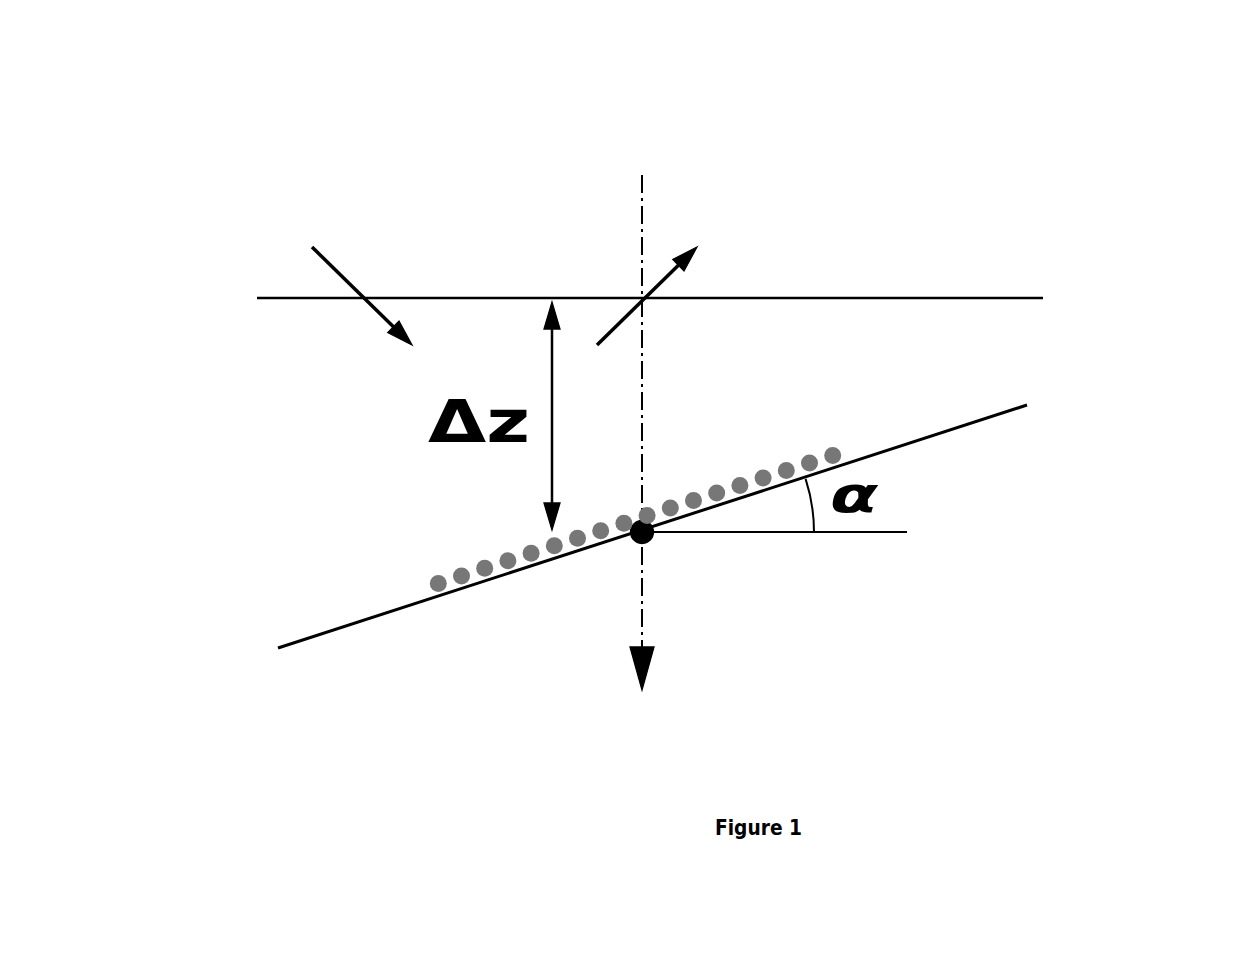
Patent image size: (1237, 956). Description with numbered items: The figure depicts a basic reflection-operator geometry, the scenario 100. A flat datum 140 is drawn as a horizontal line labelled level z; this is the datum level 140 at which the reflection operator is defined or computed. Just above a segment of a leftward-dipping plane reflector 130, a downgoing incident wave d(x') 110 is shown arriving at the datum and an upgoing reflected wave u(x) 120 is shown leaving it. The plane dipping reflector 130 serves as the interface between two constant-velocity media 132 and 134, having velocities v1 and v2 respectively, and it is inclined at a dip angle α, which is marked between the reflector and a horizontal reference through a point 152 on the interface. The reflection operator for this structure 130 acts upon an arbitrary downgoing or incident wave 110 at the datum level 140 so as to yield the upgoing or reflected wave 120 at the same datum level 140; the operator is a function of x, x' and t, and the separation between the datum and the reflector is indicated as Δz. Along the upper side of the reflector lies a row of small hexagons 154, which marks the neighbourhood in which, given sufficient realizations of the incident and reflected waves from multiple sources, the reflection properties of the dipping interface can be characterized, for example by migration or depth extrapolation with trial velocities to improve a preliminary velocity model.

The scenario 100 is at (355, 130).
The downgoing incident wave d(x') 110 is at (345, 263).
The upgoing reflected wave u(x) 120 is at (810, 200).
The plane dipping reflector 130 is at (1018, 402).
The constant-velocity medium 132 is at (293, 543).
The constant-velocity medium 134 is at (390, 703).
The flat datum 140 is at (1038, 288).
The image point on reflector 152 is at (657, 553).
The row of small hexagons 154 is at (490, 542).